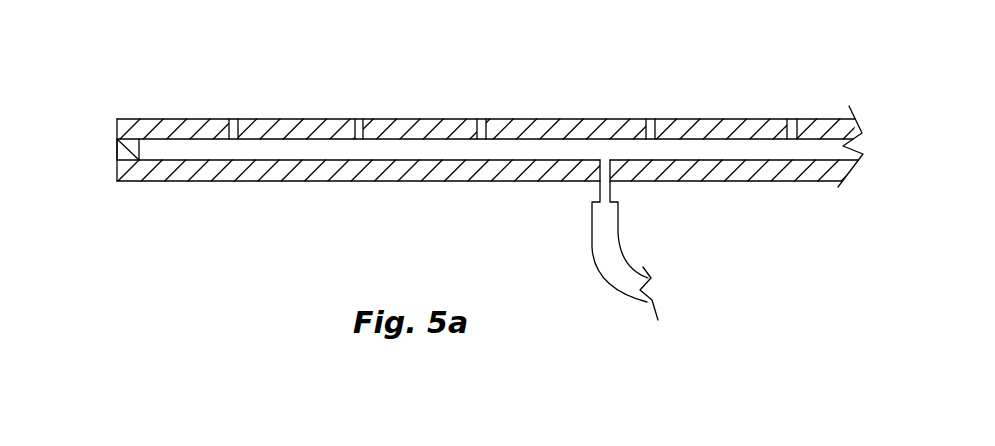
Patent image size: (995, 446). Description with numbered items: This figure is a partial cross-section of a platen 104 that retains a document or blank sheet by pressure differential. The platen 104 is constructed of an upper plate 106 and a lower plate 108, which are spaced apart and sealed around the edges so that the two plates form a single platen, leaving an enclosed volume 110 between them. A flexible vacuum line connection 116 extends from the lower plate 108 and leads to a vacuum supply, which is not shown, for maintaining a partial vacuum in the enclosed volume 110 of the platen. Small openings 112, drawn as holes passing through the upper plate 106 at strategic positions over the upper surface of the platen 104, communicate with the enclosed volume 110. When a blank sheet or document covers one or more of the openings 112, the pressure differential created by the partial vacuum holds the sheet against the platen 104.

The platen 104 is at (163, 52).
The upper plate 106 is at (613, 117).
The lower plate 108 is at (777, 182).
The enclosed volume 110 is at (435, 162).
The openings 112 is at (233, 121).
The flexible vacuum line connection 116 is at (625, 287).